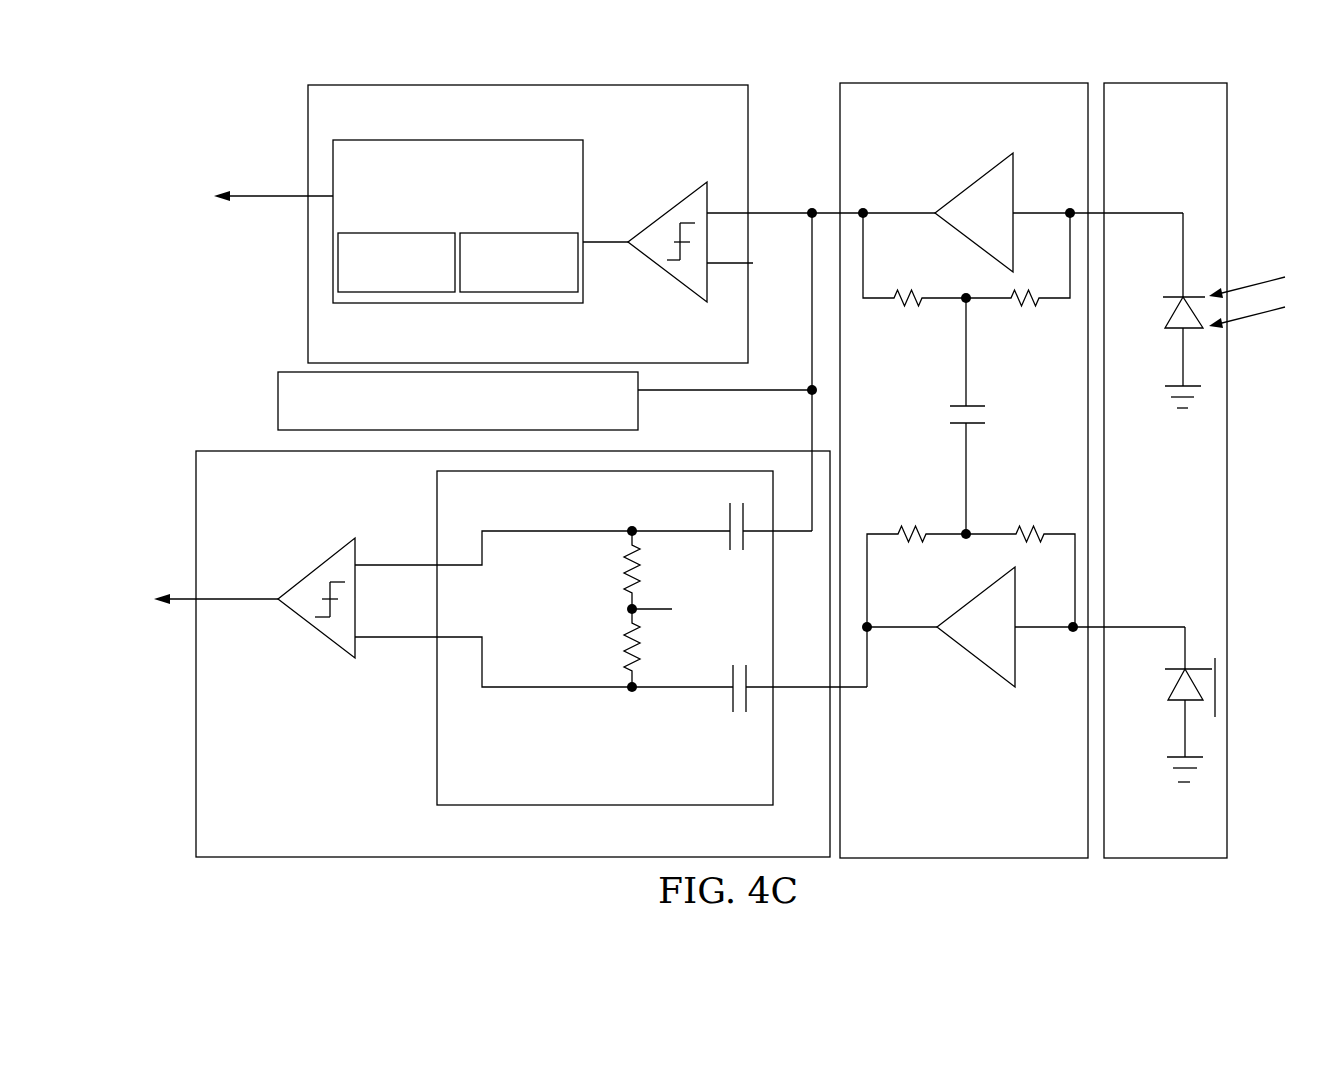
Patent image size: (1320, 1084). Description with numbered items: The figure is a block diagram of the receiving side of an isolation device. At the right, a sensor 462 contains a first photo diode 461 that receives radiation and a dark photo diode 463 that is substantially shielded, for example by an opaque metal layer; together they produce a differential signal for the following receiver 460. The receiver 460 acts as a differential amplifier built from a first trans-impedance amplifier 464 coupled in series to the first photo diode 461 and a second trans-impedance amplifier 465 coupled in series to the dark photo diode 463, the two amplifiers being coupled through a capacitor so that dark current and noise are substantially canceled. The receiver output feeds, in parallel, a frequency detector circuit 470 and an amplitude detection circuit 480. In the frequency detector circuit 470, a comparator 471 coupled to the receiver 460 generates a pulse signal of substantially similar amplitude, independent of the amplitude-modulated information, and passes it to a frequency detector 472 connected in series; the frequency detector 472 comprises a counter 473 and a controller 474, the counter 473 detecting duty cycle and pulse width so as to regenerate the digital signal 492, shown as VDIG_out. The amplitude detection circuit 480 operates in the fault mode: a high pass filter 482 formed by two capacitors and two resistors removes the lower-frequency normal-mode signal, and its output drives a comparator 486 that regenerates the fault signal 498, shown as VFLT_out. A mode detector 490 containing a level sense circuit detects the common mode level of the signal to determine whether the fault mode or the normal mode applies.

The receiver 460 is at (1012, 470).
The first photo diode 461 is at (1178, 331).
The sensor 462 is at (1194, 470).
The dark photo diode 463 is at (1177, 702).
The first trans-impedance amplifier 464 is at (1023, 244).
The second trans-impedance amplifier 465 is at (1023, 590).
The frequency detector circuit 470 is at (506, 224).
The comparator 471 is at (670, 262).
The frequency detector 472 is at (458, 221).
The counter 473 is at (396, 262).
The controller 474 is at (519, 262).
The amplitude detection circuit 480 is at (507, 654).
The high pass filter 482 is at (611, 638).
The comparator 486 is at (317, 618).
The mode detector 490 is at (545, 401).
The regenerated digital signal 492 is at (294, 197).
The regenerated fault signal 498 is at (218, 601).